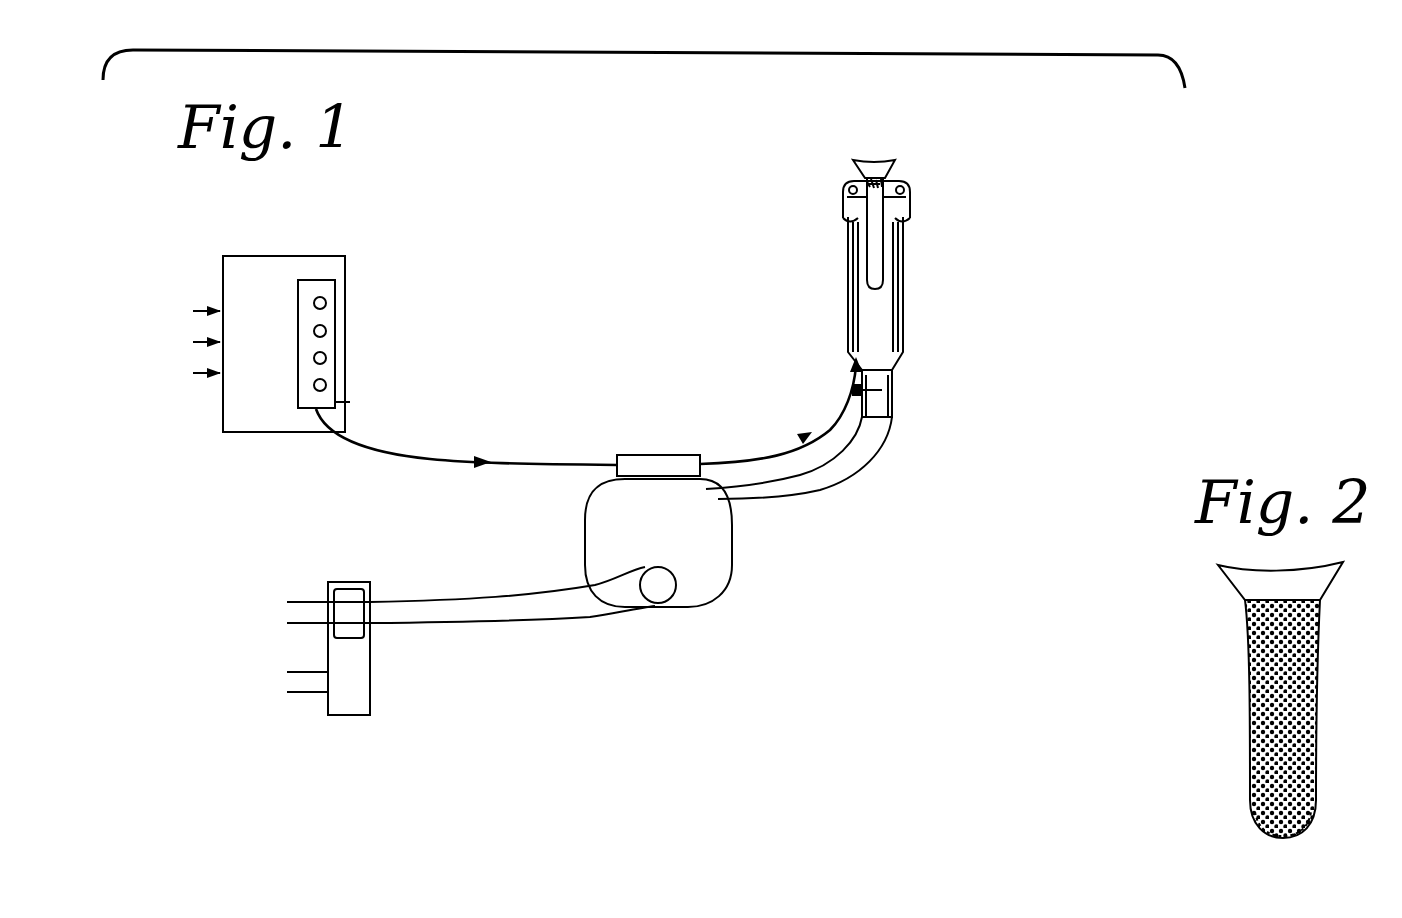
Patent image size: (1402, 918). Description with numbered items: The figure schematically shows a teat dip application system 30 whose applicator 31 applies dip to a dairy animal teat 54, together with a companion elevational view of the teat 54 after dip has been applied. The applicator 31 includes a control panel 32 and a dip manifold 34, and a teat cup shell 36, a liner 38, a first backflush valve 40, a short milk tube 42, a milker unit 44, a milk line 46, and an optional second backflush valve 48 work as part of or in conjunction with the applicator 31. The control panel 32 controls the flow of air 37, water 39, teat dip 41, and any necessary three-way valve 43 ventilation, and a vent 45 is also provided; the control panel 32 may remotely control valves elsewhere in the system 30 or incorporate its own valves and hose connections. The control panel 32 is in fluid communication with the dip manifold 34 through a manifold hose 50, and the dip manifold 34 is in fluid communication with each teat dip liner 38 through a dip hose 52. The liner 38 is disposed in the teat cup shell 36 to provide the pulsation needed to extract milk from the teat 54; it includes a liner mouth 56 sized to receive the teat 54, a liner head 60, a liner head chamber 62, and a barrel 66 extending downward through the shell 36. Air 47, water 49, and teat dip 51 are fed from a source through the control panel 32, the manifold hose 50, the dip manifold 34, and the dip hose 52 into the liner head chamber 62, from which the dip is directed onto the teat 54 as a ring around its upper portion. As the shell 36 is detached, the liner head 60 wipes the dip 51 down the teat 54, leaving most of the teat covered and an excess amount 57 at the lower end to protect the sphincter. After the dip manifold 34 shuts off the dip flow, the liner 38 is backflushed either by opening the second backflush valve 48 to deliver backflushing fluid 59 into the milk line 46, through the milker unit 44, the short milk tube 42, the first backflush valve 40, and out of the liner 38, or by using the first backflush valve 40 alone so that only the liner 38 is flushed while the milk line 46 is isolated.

In FIG. 1, the teat dip application system 30 is at (530, 200).
In FIG. 1, the applicator 31 is at (746, 237).
In FIG. 1, the control panel 32 is at (257, 412).
In FIG. 1, the dip manifold 34 is at (652, 467).
In FIG. 1, the teat cup shell 36 is at (906, 312).
In FIG. 1, the air 37 is at (336, 303).
In FIG. 1, the liner 38 is at (895, 270).
In FIG. 1, the water 39 is at (336, 331).
In FIG. 1, the first backflush valve 40 is at (888, 392).
In FIG. 1, the teat dip 41 is at (336, 358).
In FIG. 1, the short milk tube 42 is at (852, 452).
In FIG. 1, the three-way valve 43 is at (336, 385).
In FIG. 1, the milker unit 44 is at (710, 580).
In FIG. 1, the vent 45 is at (363, 416).
In FIG. 1, the milk line 46 is at (299, 614).
In FIG. 1, the air 47 is at (191, 310).
In FIG. 1, the second backflush valve 48 is at (363, 687).
In FIG. 1, the water 49 is at (191, 344).
In FIG. 1, the manifold hose 50 is at (523, 470).
In FIG. 1, the teat dip 51 is at (190, 378).
In FIG. 2, the teat dip 51 is at (1266, 655).
In FIG. 1, the dip hose 52 is at (852, 328).
In FIG. 1, the teat 54 is at (860, 156).
In FIG. 2, the teat 54 is at (1313, 582).
In FIG. 1, the liner mouth 56 is at (920, 172).
In FIG. 2, the excess amount of dip 57 is at (1256, 827).
In FIG. 1, the backflushing fluid 59 is at (300, 687).
In FIG. 1, the liner head 60 is at (908, 194).
In FIG. 1, the liner head chamber 62 is at (903, 206).
In FIG. 1, the barrel 66 is at (872, 325).